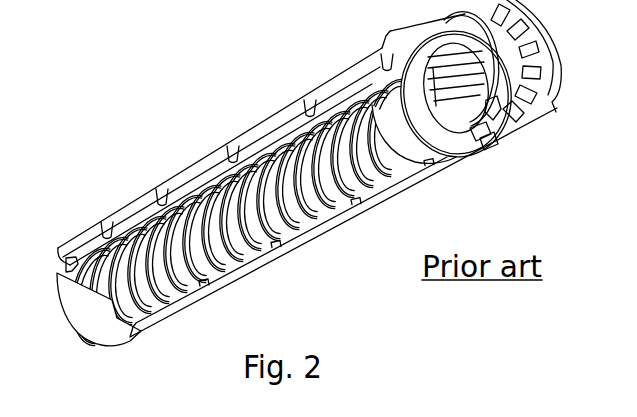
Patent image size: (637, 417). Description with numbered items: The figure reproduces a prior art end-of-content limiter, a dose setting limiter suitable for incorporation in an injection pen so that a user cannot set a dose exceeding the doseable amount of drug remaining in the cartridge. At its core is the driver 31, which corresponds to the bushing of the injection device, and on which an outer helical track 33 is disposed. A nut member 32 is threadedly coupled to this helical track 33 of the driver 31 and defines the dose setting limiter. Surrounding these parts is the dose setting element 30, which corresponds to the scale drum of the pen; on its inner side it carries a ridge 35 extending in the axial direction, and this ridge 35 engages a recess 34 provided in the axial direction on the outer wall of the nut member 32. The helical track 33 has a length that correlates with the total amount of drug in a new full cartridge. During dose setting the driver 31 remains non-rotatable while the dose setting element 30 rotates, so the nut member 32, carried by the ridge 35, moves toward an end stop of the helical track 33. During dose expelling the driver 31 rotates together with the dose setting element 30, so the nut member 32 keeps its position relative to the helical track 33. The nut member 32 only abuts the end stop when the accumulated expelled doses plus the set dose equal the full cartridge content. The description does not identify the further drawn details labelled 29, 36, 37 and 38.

The tab 29 is at (313, 107).
The dose setting element 30 is at (393, 190).
The driver 31 is at (438, 150).
The nut member 32 is at (100, 330).
The outer helical track 33 is at (217, 262).
The recess 34 is at (66, 265).
The ridge 35 is at (210, 182).
The bearing 36 is at (525, 130).
The ring 37 is at (465, 140).
The lug 38 is at (488, 117).